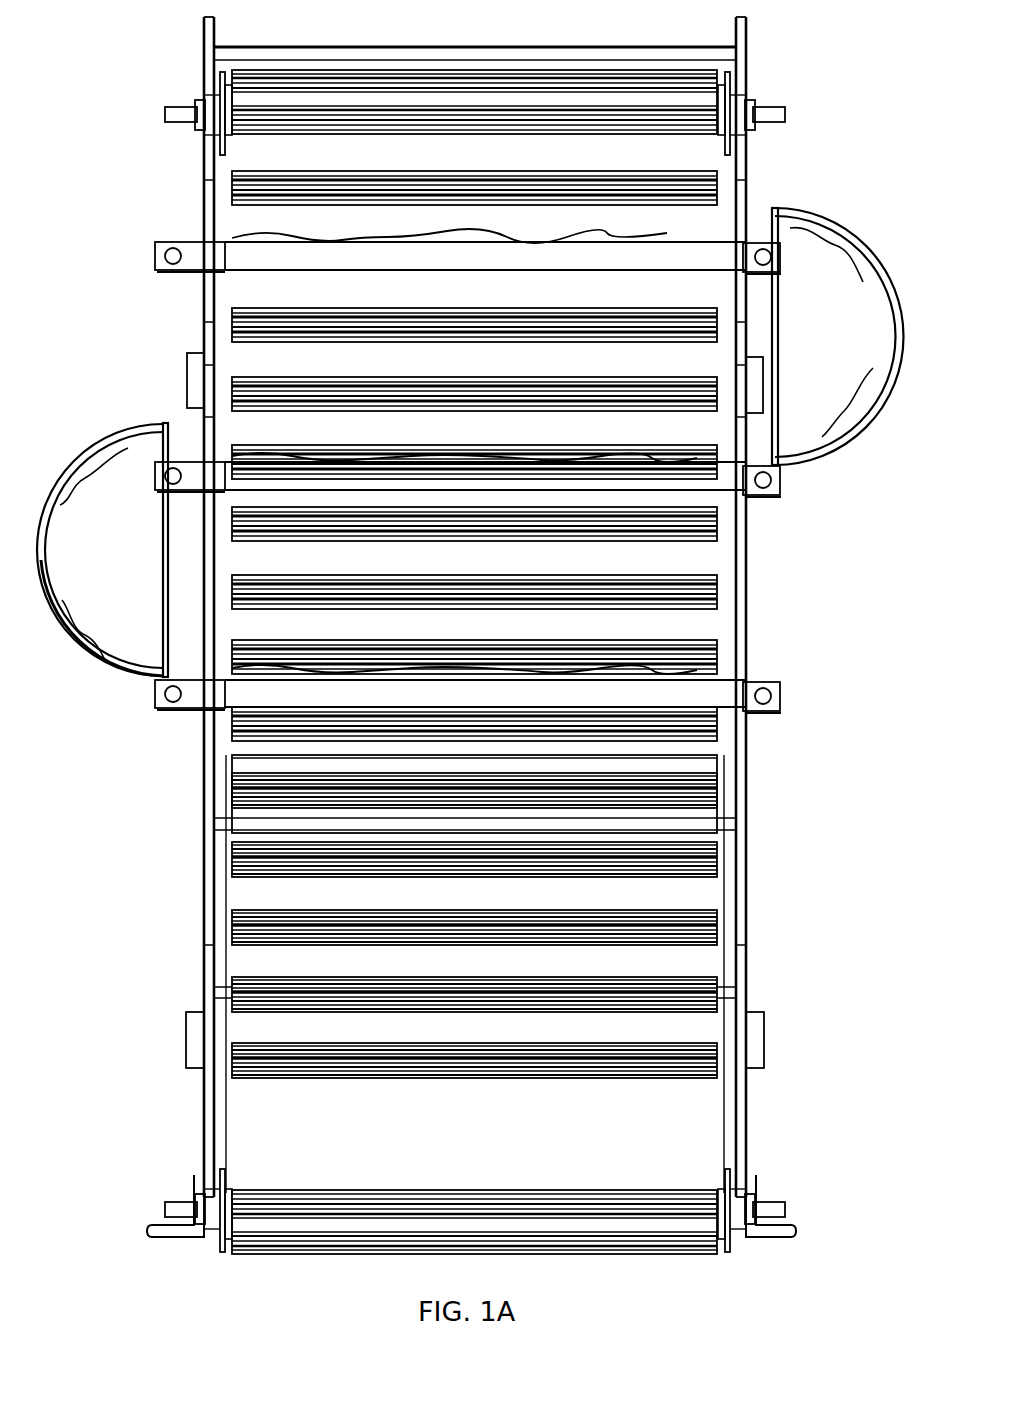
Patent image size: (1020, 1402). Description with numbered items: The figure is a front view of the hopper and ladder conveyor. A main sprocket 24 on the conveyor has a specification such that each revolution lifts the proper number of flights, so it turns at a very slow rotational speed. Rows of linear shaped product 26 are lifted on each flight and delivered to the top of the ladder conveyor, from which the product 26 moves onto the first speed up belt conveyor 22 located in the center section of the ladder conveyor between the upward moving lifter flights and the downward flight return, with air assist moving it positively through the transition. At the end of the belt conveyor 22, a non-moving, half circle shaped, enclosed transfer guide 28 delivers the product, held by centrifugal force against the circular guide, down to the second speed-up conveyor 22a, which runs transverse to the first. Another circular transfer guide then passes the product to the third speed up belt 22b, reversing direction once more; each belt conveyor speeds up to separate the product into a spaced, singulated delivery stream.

The first speed up belt conveyor 22 is at (165, 248).
The second speed-up conveyor 22a is at (190, 478).
The third speed up belt 22b is at (192, 702).
The main sprocket 24 is at (210, 95).
The product 26 is at (103, 655).
The transfer guide 28 is at (62, 543).